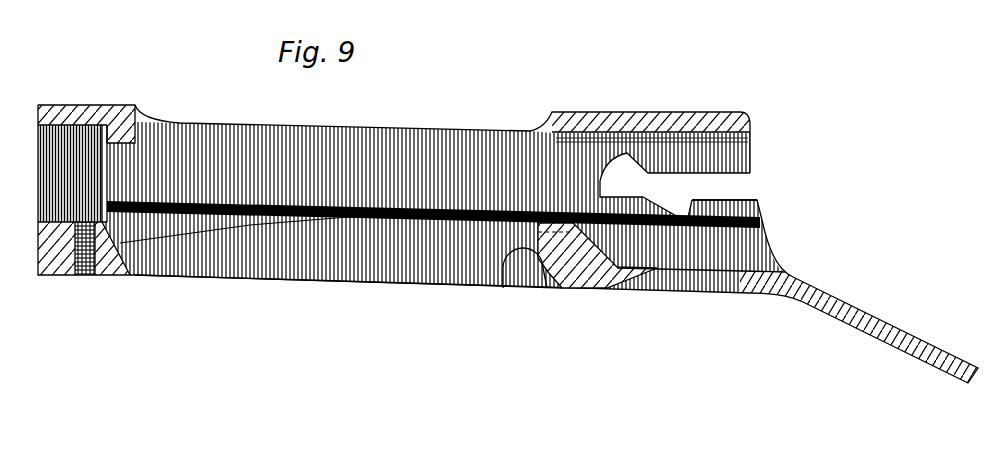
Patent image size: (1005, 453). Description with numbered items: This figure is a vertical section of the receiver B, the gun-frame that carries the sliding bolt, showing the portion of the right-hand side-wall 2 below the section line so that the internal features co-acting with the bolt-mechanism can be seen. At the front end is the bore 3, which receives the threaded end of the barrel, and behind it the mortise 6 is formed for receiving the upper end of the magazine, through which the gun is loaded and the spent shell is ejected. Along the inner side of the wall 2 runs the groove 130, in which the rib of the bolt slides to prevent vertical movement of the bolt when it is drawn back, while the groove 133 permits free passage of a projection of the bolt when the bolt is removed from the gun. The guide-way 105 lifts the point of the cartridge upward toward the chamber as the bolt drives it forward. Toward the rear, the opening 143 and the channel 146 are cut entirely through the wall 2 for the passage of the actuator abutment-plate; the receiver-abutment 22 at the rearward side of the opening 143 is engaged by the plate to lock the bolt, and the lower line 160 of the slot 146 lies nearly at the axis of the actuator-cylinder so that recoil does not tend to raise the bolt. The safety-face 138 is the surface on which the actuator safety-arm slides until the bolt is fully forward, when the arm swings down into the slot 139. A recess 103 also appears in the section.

The right-hand side-wall 2 is at (387, 148).
The bore 3 is at (58, 168).
The mortise 6 is at (330, 258).
The receiver-abutment 22 is at (685, 220).
The receiver B is at (570, 132).
The recess 103 is at (533, 278).
The guide-way 105 is at (110, 222).
The groove 130 is at (350, 204).
The groove 133 is at (553, 227).
The safety-face 138 is at (748, 268).
The slot 139 is at (692, 273).
The opening 143 is at (622, 185).
The opening 146 is at (742, 189).
The lower line of receiver-slot 160 is at (730, 197).